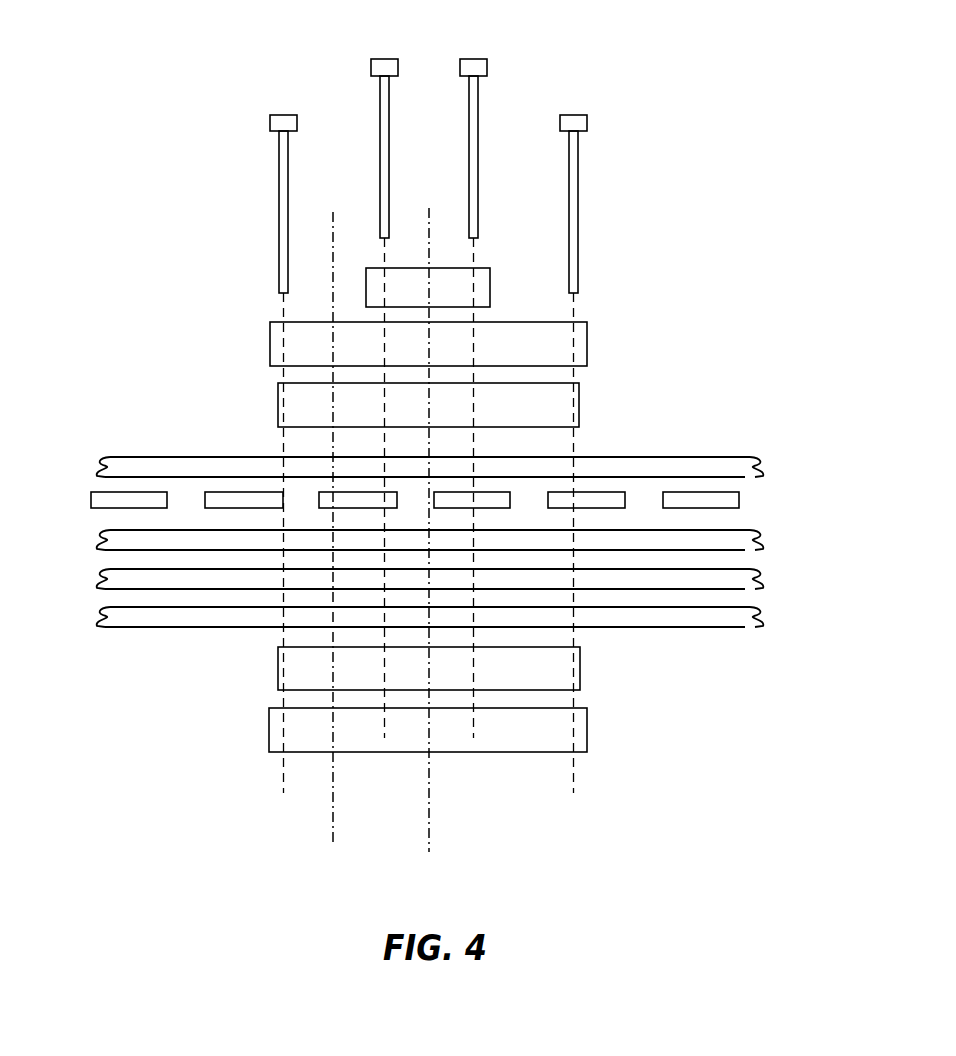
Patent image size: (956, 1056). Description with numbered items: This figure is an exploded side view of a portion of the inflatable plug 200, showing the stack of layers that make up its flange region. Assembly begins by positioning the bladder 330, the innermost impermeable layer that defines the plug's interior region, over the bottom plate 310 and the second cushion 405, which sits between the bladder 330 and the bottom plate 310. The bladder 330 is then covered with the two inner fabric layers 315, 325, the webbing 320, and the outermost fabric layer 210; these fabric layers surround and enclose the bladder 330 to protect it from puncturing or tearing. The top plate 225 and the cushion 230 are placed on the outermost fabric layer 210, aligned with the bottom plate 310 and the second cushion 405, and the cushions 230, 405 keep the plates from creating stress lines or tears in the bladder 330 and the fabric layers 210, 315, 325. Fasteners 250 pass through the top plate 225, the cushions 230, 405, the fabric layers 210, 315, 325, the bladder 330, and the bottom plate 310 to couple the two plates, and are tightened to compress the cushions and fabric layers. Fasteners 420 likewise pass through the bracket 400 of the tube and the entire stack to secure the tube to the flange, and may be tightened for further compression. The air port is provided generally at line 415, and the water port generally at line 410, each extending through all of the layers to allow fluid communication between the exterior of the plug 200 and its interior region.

The plug 200 is at (133, 173).
The fasteners 250 is at (281, 115).
The fasteners 420 is at (380, 59).
The bracket 400 is at (490, 283).
The top plate 225 is at (587, 343).
The cushion 230 is at (579, 407).
The outermost fabric layer 210 is at (762, 467).
The webbing 320 is at (740, 500).
The inner fabric layer 315 is at (765, 538).
The inner fabric layer 325 is at (762, 578).
The bladder 330 is at (765, 615).
The second cushion 405 is at (580, 665).
The bottom plate 310 is at (587, 723).
The line 410 is at (429, 782).
The line 415 is at (333, 815).